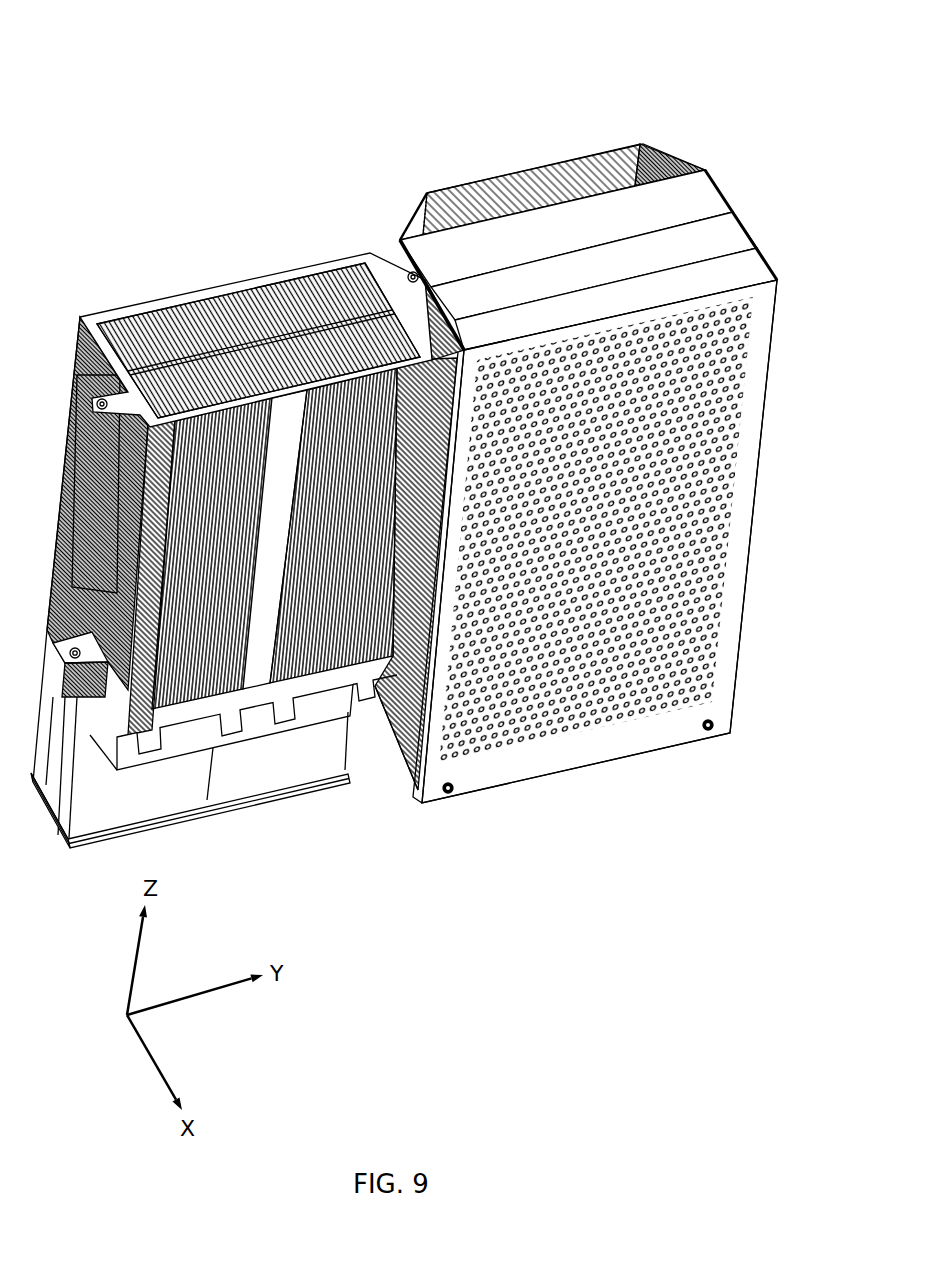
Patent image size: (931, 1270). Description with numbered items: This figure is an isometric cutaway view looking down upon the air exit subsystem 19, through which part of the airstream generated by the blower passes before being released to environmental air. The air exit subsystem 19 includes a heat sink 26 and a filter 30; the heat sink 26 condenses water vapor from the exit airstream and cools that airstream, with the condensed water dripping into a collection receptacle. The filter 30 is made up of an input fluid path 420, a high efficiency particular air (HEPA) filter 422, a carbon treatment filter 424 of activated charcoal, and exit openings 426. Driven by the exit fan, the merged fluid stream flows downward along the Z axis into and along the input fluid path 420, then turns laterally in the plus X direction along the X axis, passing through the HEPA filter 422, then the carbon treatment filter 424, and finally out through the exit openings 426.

The air exit subsystem 19 is at (392, 57).
The heat sink 26 is at (205, 250).
The filter 30 is at (503, 150).
The input fluid path 420 is at (583, 175).
The high efficiency particular air (HEPA) filter 422 is at (697, 200).
The carbon treatment filter 424 is at (740, 242).
The exit openings 426 is at (745, 410).